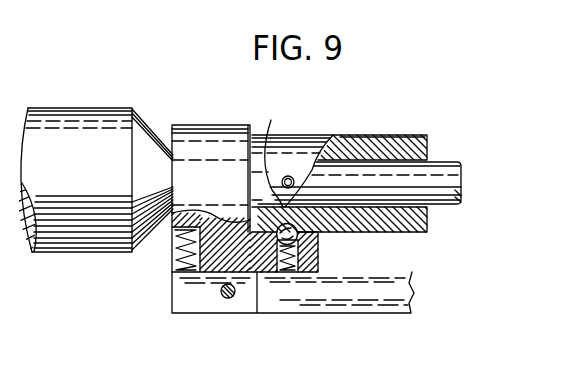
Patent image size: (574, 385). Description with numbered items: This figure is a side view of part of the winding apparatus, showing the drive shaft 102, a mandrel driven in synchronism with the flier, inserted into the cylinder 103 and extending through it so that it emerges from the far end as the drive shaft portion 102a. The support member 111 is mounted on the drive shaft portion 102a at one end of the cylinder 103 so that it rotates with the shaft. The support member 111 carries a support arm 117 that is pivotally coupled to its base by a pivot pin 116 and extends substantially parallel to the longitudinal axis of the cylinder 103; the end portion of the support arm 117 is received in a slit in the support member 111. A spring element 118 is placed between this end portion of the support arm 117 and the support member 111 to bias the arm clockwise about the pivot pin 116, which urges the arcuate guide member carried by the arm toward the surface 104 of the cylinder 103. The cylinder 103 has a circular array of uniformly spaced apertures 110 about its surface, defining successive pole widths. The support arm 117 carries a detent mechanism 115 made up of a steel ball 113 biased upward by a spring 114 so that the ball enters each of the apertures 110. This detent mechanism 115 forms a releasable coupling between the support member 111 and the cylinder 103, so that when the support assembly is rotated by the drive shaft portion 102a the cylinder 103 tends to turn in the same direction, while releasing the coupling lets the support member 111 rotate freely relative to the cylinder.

The drive shaft 102 is at (104, 81).
The drive shaft portion 102a is at (448, 162).
The cylinder 103 is at (396, 137).
The surface 104 is at (346, 135).
The apertures 110 is at (288, 176).
The support member 111 is at (202, 137).
The ball 113 is at (316, 243).
The spring 114 is at (293, 262).
The detent mechanism 115 is at (319, 239).
The pivot pin 116 is at (228, 299).
The support arm 117 is at (320, 307).
The spring element 118 is at (172, 262).